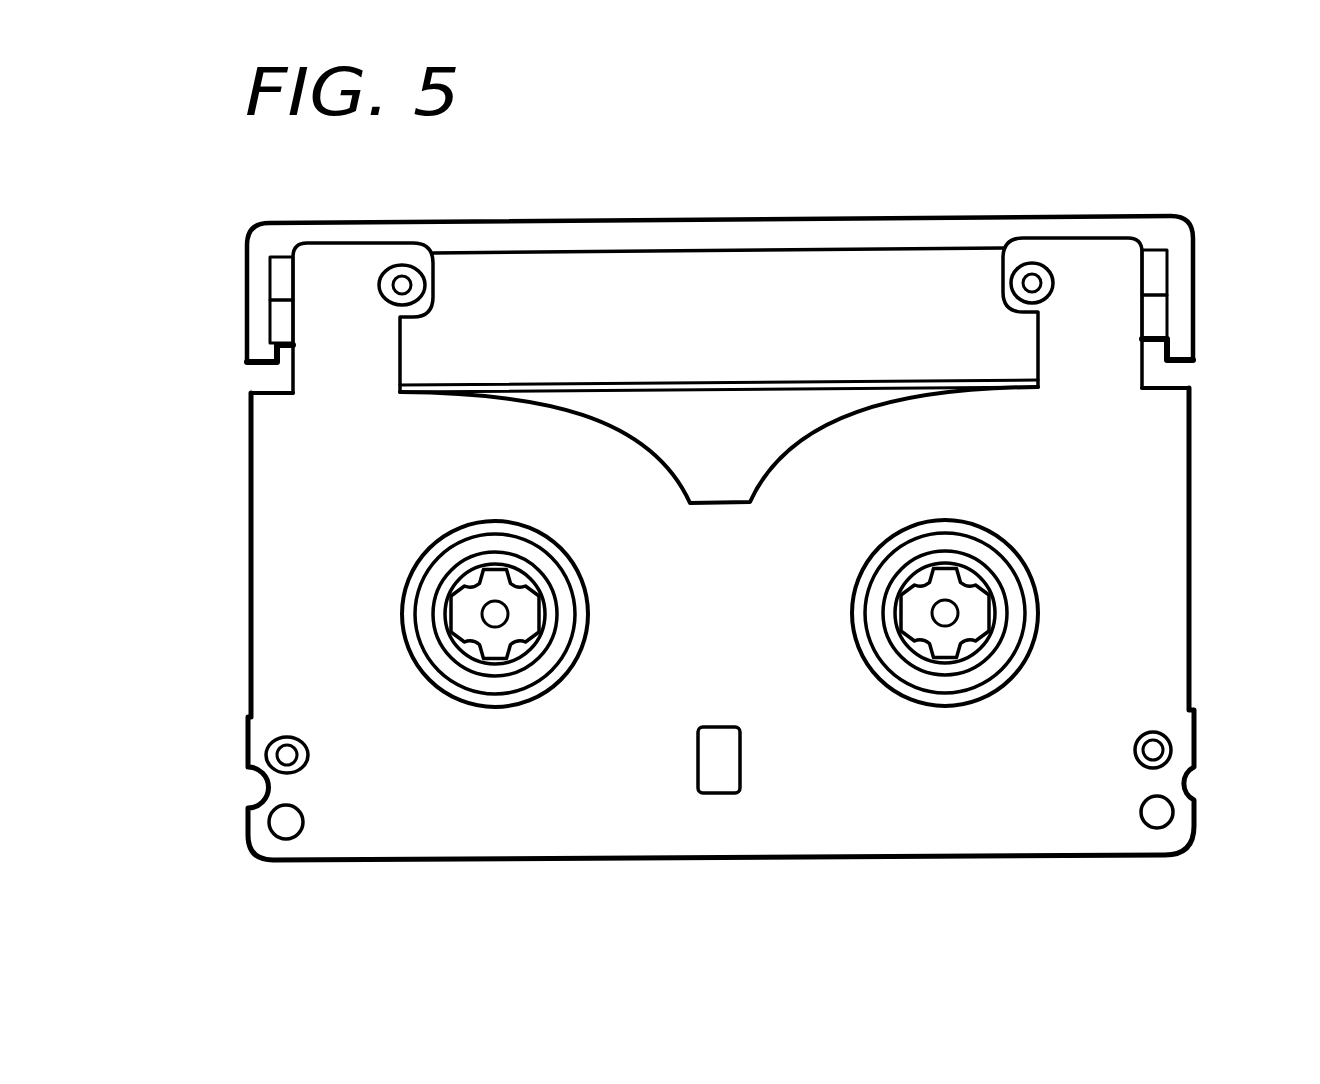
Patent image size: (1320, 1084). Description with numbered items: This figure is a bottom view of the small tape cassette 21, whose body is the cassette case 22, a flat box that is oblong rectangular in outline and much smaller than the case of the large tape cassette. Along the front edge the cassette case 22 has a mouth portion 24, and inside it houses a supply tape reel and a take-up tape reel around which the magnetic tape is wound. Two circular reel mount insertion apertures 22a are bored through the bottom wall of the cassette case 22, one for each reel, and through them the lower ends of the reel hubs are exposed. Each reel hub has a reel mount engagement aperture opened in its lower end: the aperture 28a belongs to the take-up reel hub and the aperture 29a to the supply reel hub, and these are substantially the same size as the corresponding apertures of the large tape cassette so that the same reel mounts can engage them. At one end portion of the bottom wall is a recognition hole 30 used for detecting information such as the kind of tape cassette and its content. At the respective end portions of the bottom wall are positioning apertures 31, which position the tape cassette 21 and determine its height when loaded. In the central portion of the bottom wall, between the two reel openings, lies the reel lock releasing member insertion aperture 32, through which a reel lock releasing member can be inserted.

The small tape cassette 21 is at (1092, 213).
The cassette case 22 is at (1192, 452).
The reel mount insertion apertures 22a is at (561, 548).
The mouth portion 24 is at (752, 283).
The reel mount engagement aperture 28a is at (1000, 628).
The reel mount engagement aperture 29a is at (548, 642).
The recognition hole 30 is at (273, 835).
The positioning apertures 31 is at (266, 761).
The reel lock releasing member insertion aperture 32 is at (715, 795).